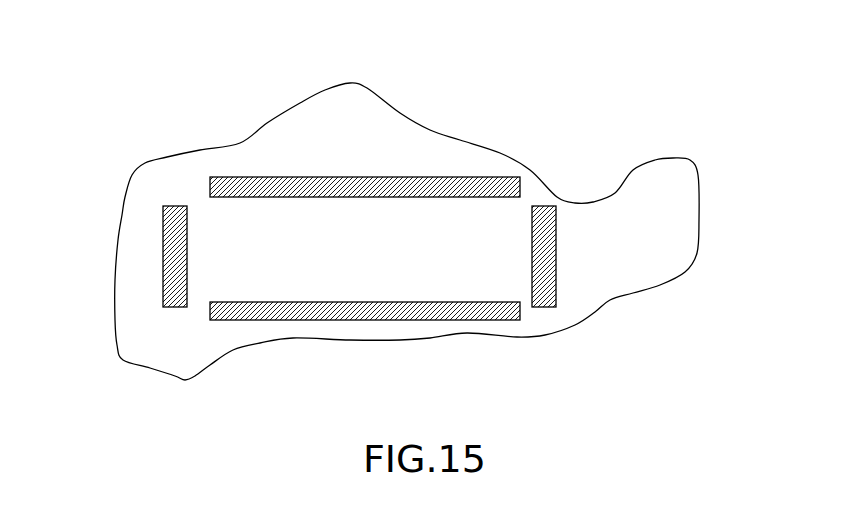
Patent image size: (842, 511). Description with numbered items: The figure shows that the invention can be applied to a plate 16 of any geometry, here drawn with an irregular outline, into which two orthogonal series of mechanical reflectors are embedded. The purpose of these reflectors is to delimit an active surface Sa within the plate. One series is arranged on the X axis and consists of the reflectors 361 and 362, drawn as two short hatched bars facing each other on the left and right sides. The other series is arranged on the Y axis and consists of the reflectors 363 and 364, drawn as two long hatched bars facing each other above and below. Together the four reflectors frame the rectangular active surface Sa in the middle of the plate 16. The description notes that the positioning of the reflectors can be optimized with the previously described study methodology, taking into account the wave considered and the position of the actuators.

The housing outline 16 is at (353, 108).
The active surface Sa is at (277, 223).
The reflector 361 is at (160, 255).
The reflector 362 is at (558, 262).
The reflector 363 is at (457, 177).
The reflector 364 is at (353, 320).